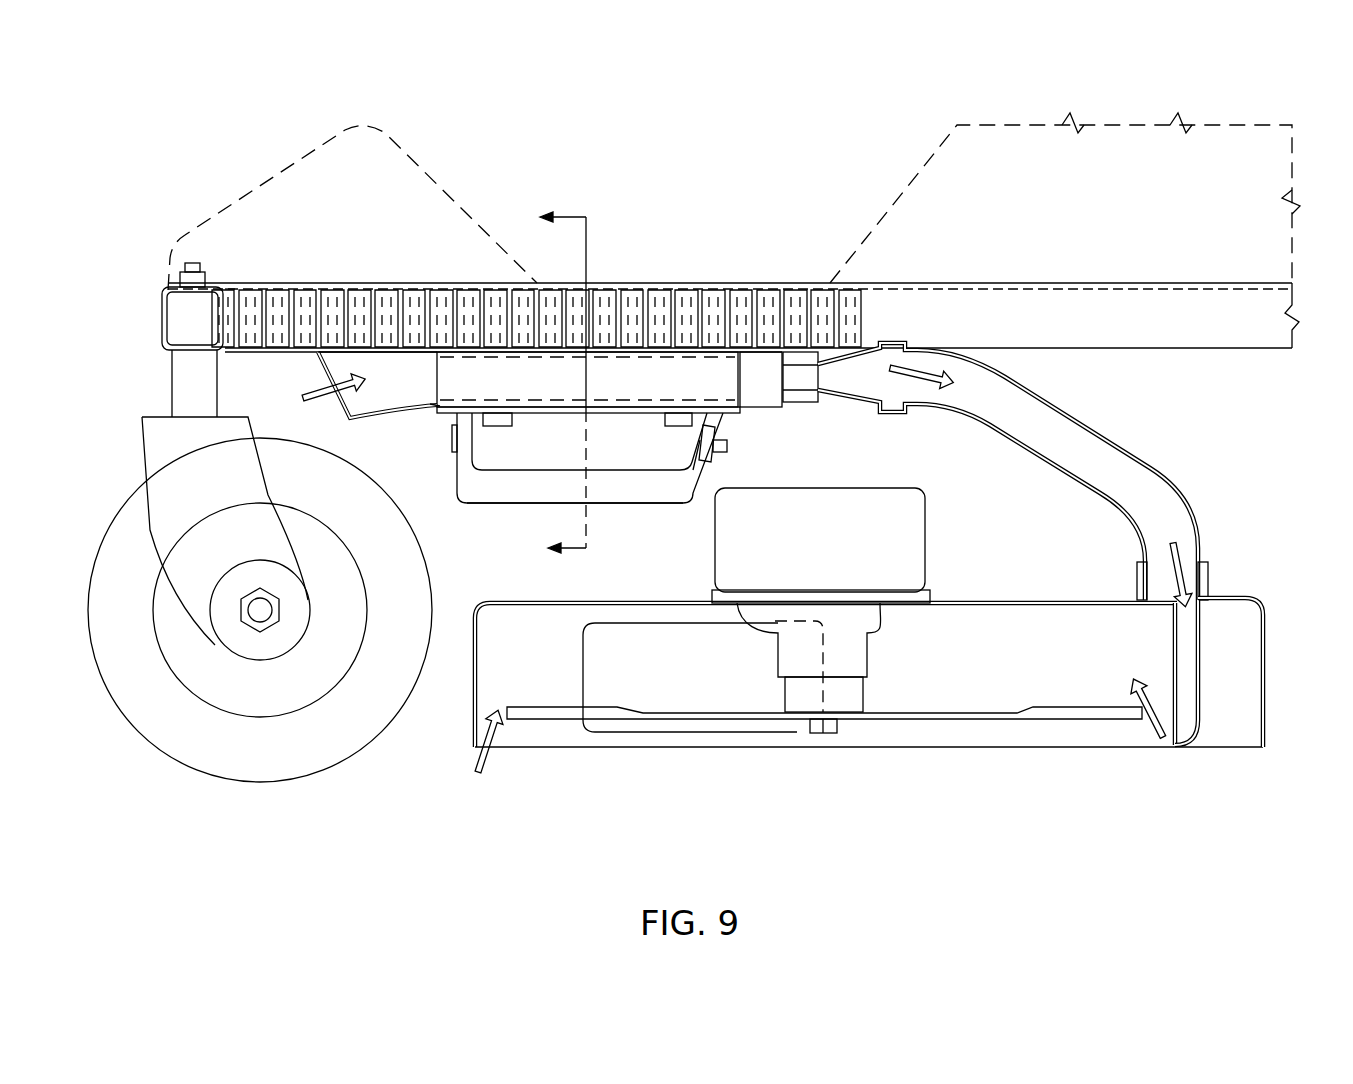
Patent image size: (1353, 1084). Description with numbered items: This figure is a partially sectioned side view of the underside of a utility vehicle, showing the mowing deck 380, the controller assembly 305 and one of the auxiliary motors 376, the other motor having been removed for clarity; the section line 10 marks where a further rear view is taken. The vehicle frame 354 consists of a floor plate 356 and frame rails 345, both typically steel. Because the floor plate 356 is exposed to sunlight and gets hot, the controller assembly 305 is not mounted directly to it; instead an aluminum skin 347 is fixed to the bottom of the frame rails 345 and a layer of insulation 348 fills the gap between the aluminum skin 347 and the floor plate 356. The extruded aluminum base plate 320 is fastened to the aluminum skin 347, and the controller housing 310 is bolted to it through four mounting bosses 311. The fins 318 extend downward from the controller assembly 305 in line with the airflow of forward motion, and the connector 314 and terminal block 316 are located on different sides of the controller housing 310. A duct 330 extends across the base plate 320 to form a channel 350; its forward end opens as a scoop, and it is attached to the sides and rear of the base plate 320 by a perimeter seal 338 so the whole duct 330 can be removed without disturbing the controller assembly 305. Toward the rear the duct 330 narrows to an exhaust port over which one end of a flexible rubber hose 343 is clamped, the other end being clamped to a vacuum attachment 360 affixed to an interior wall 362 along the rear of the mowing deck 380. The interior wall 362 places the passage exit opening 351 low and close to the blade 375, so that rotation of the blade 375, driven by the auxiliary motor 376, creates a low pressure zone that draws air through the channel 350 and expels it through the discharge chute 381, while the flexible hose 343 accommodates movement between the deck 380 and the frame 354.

The section line 10 is at (545, 384).
The controller assembly 305 is at (470, 522).
The controller housing 310 is at (563, 454).
The mounting bosses 311 is at (680, 425).
The connector 314 is at (457, 437).
The terminal block 316 is at (713, 443).
The fins 318 is at (630, 488).
The base plate 320 is at (536, 390).
The duct 330 is at (342, 404).
The perimeter seal 338 is at (433, 412).
The flexible hose 343 is at (1125, 447).
The frame rails 345 is at (1120, 325).
The aluminum skin 347 is at (253, 352).
The insulation 348 is at (472, 305).
The channel 350 is at (418, 390).
The passage exit opening 351 is at (1180, 745).
The vehicle frame 354 is at (705, 235).
The floor plate 356 is at (252, 288).
The vacuum attachment 360 is at (1200, 650).
The interior wall 362 is at (1173, 640).
The blade 375 is at (1112, 707).
The auxiliary motor 376 is at (848, 550).
The mowing deck 380 is at (990, 603).
The discharge chute 381 is at (583, 670).